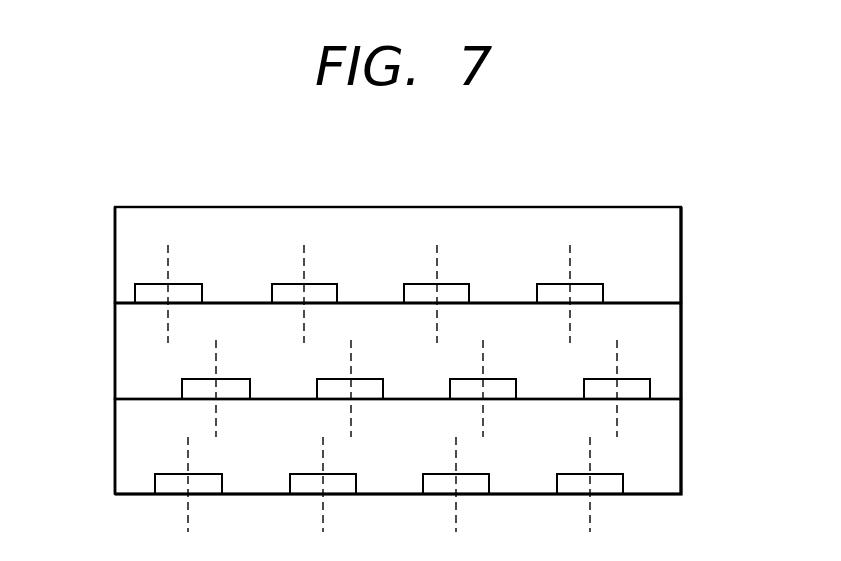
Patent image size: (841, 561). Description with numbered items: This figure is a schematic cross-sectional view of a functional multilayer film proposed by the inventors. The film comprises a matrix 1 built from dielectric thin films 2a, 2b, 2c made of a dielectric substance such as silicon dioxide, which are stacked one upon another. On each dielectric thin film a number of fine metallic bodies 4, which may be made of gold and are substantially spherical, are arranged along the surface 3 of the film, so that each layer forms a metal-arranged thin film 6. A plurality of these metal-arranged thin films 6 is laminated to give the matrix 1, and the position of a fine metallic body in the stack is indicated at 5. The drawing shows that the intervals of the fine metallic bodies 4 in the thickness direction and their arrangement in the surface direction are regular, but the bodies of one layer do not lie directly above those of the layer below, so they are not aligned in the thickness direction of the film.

The matrix 1 is at (100, 351).
The ceramic green sheet (first layer) 2a is at (682, 437).
The ceramic green sheet (second layer) 2b is at (682, 338).
The ceramic green sheet (third layer) 2c is at (682, 247).
The surface 3 is at (380, 302).
The fine metallic bodies 4 is at (585, 284).
The conductor pattern surface 5 is at (455, 279).
The metal-arranged thin film 6 is at (113, 253).